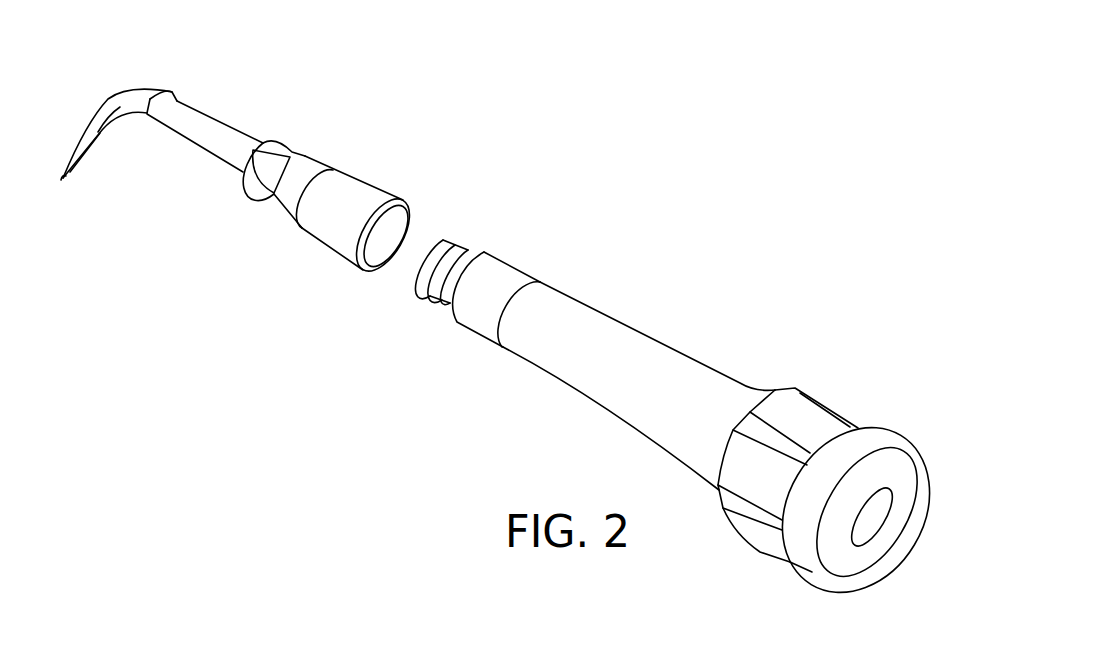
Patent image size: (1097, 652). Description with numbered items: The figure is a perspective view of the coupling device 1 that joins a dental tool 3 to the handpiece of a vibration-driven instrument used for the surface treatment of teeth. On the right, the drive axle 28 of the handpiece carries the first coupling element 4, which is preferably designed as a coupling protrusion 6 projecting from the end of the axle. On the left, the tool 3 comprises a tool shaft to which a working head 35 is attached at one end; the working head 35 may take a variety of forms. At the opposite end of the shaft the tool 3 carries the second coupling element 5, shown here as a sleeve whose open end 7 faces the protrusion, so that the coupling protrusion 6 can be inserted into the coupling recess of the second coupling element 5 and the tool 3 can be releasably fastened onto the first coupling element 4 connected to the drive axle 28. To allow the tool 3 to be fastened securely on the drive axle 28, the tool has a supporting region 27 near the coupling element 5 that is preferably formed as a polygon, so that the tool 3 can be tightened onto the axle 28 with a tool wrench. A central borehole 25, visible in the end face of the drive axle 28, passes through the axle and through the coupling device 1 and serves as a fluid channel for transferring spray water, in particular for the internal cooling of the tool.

The coupling device 1 is at (740, 204).
The tool 3 is at (225, 130).
The first coupling element 4 is at (492, 268).
The second coupling element 5 is at (352, 197).
The coupling protrusion 6 is at (445, 295).
The sleeve opening 7 is at (392, 218).
The central borehole 25 is at (875, 504).
The supporting region 27 is at (267, 170).
The drive axle 28 is at (627, 342).
The working head 35 is at (98, 108).